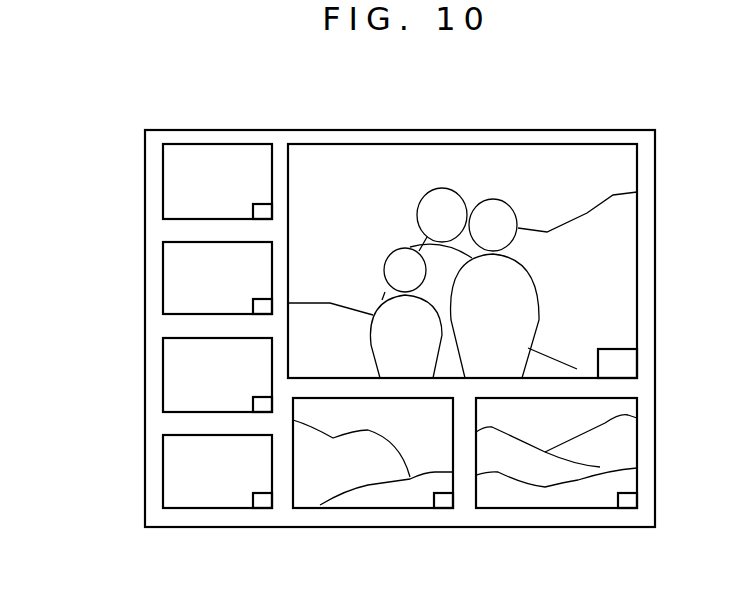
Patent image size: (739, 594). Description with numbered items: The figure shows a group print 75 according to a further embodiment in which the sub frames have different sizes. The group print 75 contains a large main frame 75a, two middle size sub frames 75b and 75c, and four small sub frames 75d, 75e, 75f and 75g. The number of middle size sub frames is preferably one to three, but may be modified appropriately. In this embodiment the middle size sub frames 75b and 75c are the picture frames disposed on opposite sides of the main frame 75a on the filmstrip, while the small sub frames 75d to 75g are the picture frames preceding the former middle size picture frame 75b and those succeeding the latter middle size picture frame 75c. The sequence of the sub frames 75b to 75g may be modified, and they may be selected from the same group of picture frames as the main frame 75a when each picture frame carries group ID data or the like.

The group print 75 is at (377, 129).
The main frame 75a is at (392, 167).
The middle size sub frame 75b is at (307, 502).
The middle size sub frame 75c is at (520, 502).
The small sub frame 75d is at (168, 177).
The small sub frame 75e is at (168, 275).
The small sub frame 75f is at (168, 369).
The small sub frame 75g is at (168, 468).